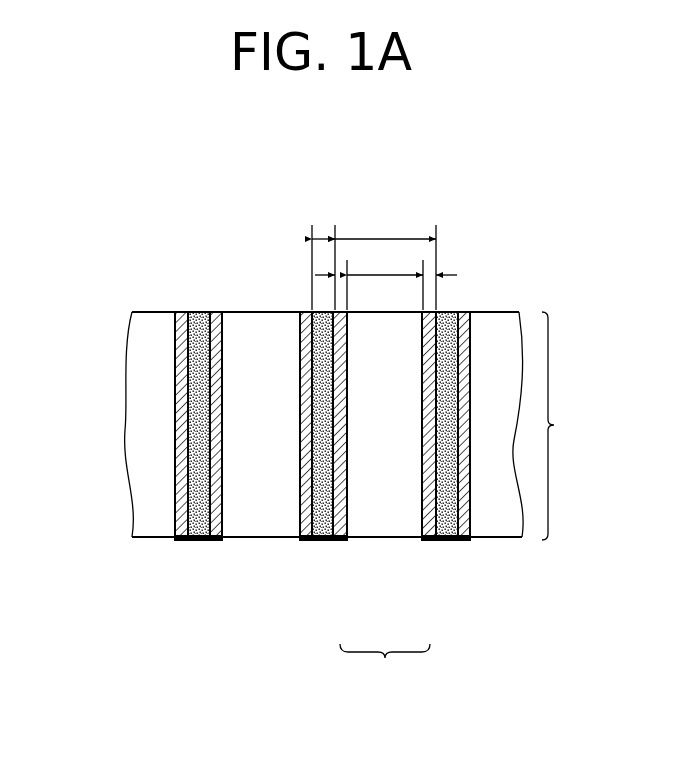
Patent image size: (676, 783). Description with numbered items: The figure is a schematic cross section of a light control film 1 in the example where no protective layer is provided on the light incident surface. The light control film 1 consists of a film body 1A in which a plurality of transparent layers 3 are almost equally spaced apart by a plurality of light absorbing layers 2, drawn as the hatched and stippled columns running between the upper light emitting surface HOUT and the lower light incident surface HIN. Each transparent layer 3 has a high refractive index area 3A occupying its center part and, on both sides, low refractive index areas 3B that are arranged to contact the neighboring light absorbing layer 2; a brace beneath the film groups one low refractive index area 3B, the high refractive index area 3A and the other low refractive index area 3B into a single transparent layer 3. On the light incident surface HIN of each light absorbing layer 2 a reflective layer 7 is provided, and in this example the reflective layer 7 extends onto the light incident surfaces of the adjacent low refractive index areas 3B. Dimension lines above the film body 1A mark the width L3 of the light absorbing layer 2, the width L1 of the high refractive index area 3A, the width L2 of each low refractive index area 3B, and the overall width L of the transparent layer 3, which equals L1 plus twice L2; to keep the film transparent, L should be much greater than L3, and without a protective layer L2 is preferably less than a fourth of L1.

The light control film 1 is at (522, 546).
The film body 1A is at (571, 426).
The light absorbing layer 2 is at (203, 312).
The transparent layer 3 is at (385, 671).
The high refractive index area 3A is at (168, 325).
The low refractive index area 3B is at (175, 404).
The reflective layer 7 is at (194, 541).
The width of the transparent layer L is at (376, 240).
The width of the high refractive index area L1 is at (387, 273).
The width of the low refractive index area L2 is at (343, 275).
The width of the light absorbing layer L3 is at (328, 240).
The light emitting surface HOUT is at (143, 311).
The light incident surface HIN is at (138, 540).